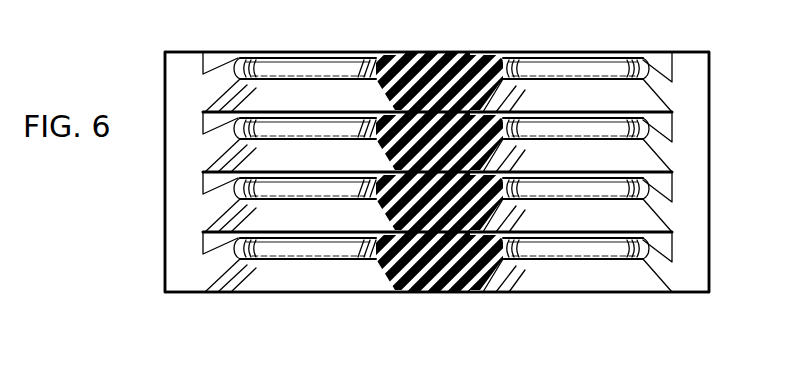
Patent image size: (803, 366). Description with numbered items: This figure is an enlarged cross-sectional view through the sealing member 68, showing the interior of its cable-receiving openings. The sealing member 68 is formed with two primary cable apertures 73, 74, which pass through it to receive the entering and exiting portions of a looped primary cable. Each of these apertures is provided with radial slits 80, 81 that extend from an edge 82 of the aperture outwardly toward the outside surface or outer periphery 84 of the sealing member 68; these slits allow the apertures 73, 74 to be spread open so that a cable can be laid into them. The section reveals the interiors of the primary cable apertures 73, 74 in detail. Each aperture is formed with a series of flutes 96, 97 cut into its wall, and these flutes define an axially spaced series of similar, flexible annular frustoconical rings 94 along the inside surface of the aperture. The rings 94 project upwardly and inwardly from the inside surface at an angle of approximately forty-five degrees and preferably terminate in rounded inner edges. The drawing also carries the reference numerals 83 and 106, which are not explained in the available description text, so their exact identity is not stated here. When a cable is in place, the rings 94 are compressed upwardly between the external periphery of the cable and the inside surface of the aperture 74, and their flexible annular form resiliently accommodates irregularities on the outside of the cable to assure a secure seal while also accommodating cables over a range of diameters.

The sealing member 68 is at (160, 207).
The primary cable aperture 73 is at (318, 265).
The primary cable aperture 74 is at (612, 270).
The radial slit 80 is at (188, 180).
The radial slit 81 is at (702, 212).
The edge 82 is at (266, 257).
The right hatched web 83 is at (530, 240).
The outer periphery 84 is at (167, 262).
The flexible annular frustoconical ring 94 is at (240, 62).
The flute 96 is at (222, 117).
The flute 97 is at (503, 106).
The housing top wall 106 is at (170, 50).